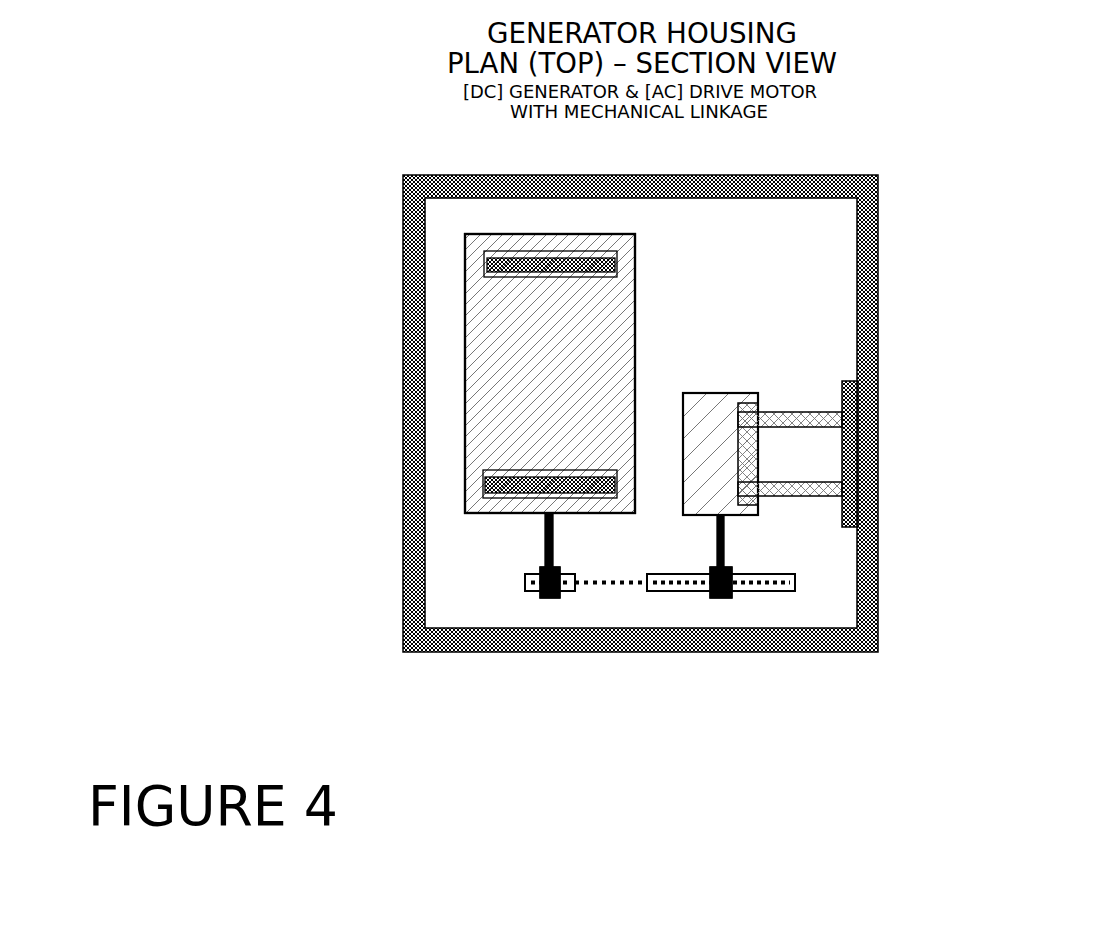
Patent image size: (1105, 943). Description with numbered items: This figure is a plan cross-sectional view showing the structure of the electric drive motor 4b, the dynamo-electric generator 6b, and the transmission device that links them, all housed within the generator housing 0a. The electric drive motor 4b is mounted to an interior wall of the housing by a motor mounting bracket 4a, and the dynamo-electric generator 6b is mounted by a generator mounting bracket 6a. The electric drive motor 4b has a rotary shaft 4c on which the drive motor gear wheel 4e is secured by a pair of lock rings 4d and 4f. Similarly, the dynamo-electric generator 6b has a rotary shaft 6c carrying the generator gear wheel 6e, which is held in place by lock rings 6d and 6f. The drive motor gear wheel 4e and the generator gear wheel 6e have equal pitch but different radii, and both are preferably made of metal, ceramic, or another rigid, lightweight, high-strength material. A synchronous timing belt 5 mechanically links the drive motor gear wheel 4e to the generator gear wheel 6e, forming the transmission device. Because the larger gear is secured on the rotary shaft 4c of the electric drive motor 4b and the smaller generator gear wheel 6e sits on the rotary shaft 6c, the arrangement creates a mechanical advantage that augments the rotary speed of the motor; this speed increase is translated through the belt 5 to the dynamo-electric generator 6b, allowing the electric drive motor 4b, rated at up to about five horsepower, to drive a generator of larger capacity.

The generator housing 0a is at (645, 172).
The generator mounting bracket 6a is at (465, 332).
The dynamo-electric generator 6b is at (550, 230).
The rotary shaft 6c is at (540, 553).
The lock ring 6d is at (528, 572).
The generator gear wheel 6e is at (515, 582).
The lock ring 6f is at (538, 598).
The motor mounting bracket 4a is at (792, 475).
The electric drive motor 4b is at (720, 390).
The rotary shaft 4c is at (725, 553).
The lock ring 4d is at (735, 572).
The drive motor gear wheel 4e is at (800, 582).
The lock ring 4f is at (735, 598).
The synchronous timing belt 5 is at (610, 588).